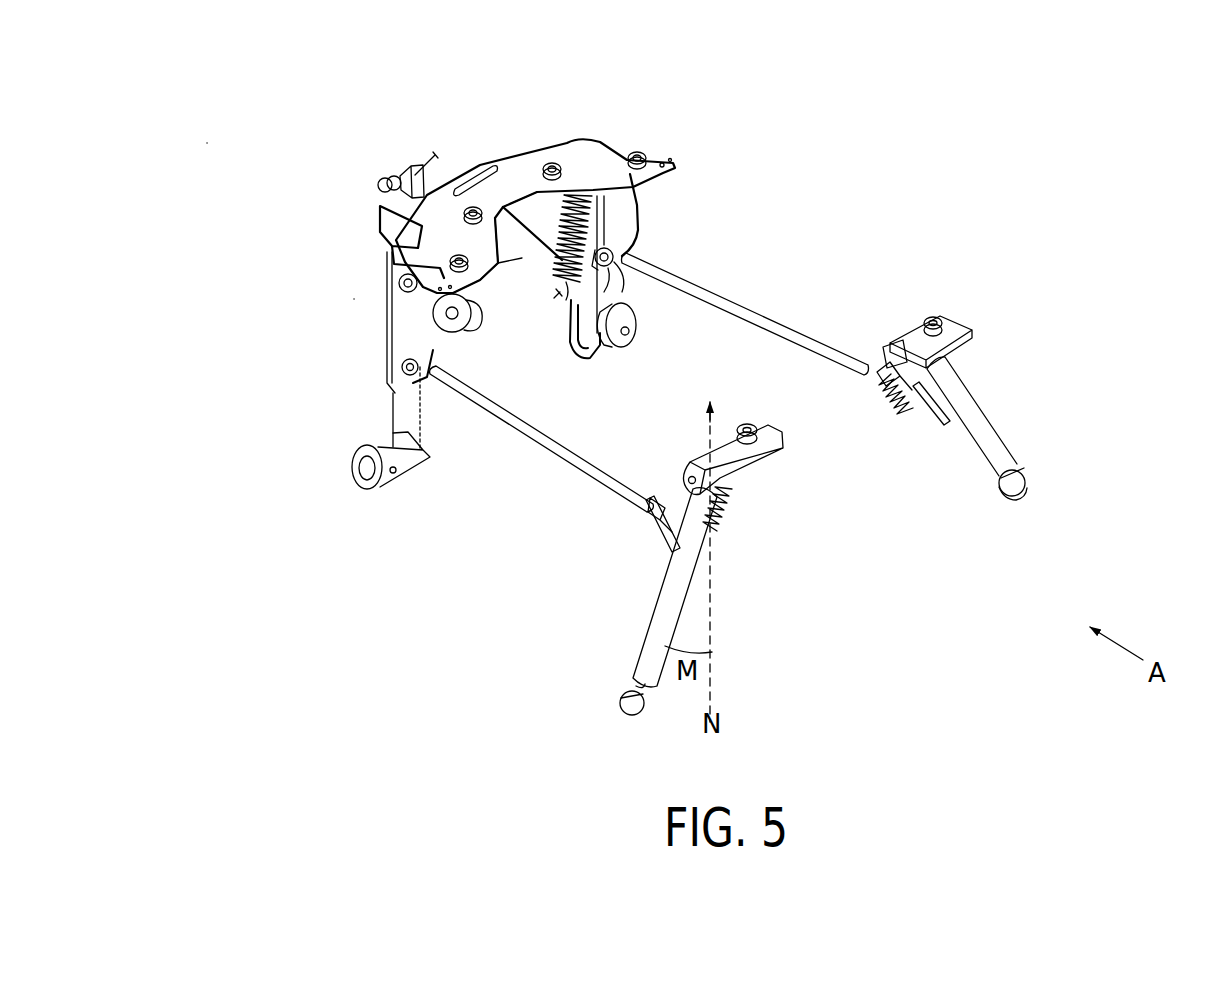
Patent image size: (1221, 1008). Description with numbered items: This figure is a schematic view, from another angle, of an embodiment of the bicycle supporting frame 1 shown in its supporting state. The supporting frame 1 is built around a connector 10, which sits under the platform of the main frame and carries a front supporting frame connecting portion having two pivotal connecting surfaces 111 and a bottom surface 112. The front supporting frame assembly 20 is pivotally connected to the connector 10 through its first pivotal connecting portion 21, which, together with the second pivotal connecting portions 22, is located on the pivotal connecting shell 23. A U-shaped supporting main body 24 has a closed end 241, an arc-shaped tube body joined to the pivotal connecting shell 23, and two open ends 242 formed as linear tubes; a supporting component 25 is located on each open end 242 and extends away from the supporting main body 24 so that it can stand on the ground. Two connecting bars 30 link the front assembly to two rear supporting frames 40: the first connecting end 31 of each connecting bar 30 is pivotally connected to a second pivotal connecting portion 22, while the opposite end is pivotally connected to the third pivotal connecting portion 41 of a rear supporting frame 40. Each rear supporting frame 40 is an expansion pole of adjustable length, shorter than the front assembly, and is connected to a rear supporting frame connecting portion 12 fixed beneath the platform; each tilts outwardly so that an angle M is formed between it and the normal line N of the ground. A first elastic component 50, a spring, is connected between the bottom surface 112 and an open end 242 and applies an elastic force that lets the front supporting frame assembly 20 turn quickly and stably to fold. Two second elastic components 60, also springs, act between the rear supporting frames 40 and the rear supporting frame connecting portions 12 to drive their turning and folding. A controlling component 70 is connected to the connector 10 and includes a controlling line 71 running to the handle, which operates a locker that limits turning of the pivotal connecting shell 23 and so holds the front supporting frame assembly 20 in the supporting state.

The supporting frame 1 is at (207, 143).
The connector 10 is at (598, 156).
The rear supporting frame connecting portion 12 is at (768, 442).
The front supporting frame assembly 20 is at (354, 299).
The first pivotal connecting portion 21 is at (399, 284).
The second pivotal connecting portion 22 is at (634, 246).
The pivotal connecting shell 23 is at (397, 348).
The supporting main body 24 is at (475, 278).
The closed end 241 is at (520, 207).
The open end 242 is at (566, 318).
The supporting component 25 is at (613, 348).
The connecting bar 30 is at (757, 312).
The first connecting end 31 is at (630, 284).
The rear supporting frame 40 is at (646, 646).
The third pivotal connecting portion 41 is at (660, 535).
The first elastic component 50 is at (570, 272).
The second elastic component 60 is at (720, 514).
The controlling component 70 is at (378, 169).
The controlling line 71 is at (426, 160).
The pivotal connecting surface 111 is at (385, 252).
The bottom surface 112 is at (624, 208).